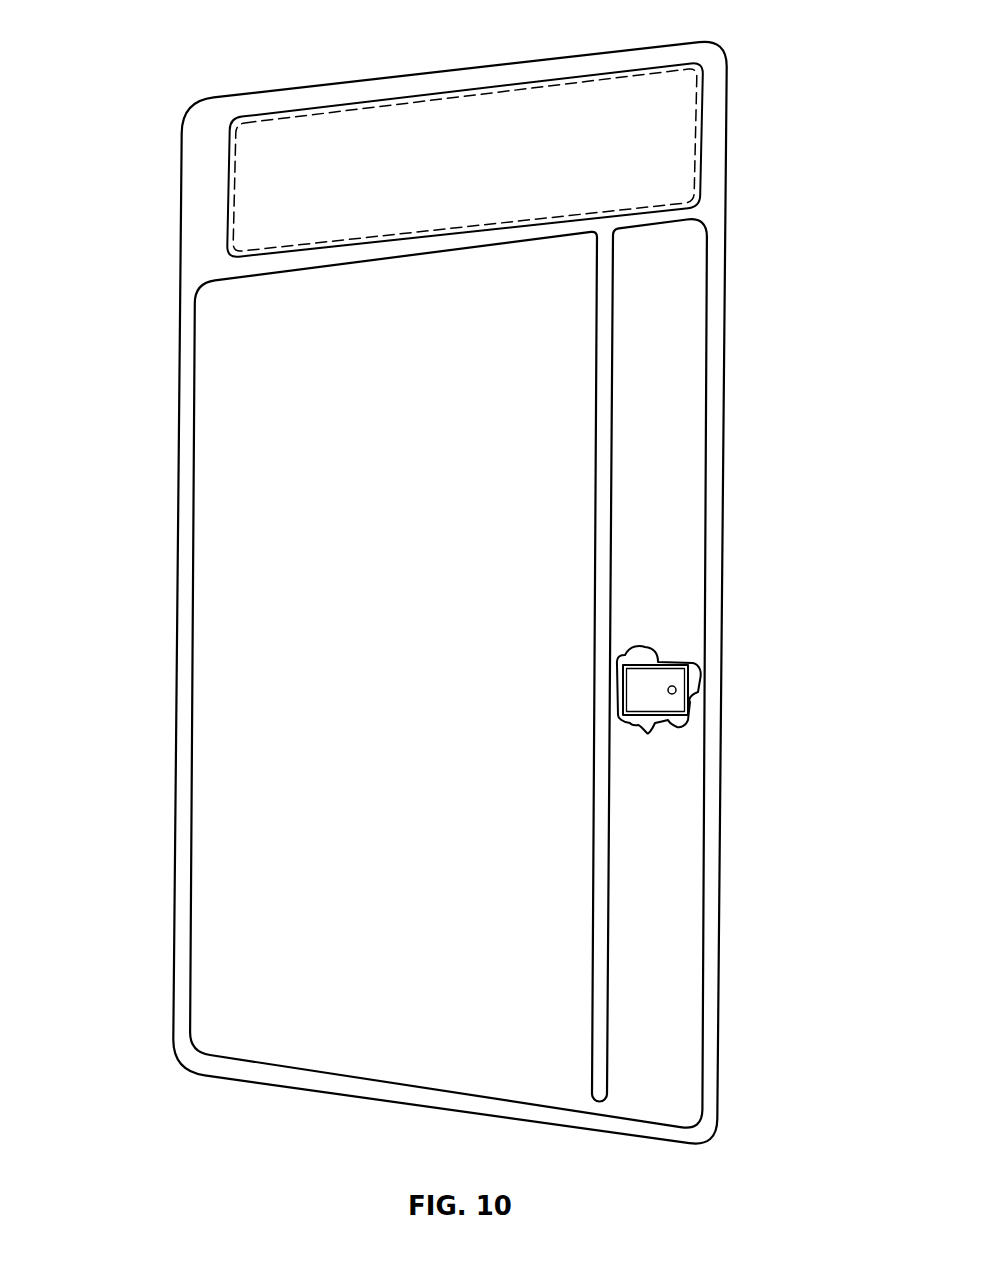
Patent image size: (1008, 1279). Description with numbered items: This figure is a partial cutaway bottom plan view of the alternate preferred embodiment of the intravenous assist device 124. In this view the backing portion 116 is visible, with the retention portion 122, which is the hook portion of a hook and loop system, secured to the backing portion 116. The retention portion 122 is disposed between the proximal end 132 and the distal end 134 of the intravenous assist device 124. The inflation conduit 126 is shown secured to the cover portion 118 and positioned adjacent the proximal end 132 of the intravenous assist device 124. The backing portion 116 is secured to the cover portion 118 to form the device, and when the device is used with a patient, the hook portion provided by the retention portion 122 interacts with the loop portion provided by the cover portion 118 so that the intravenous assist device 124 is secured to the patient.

The intravenous assist device 124 is at (300, 55).
The retention member 122 is at (370, 207).
The backing portion 116 is at (672, 795).
The cover portion 118 is at (637, 657).
The inflation conduit 126 is at (645, 678).
The proximal end 132 is at (734, 763).
The distal end 134 is at (161, 723).